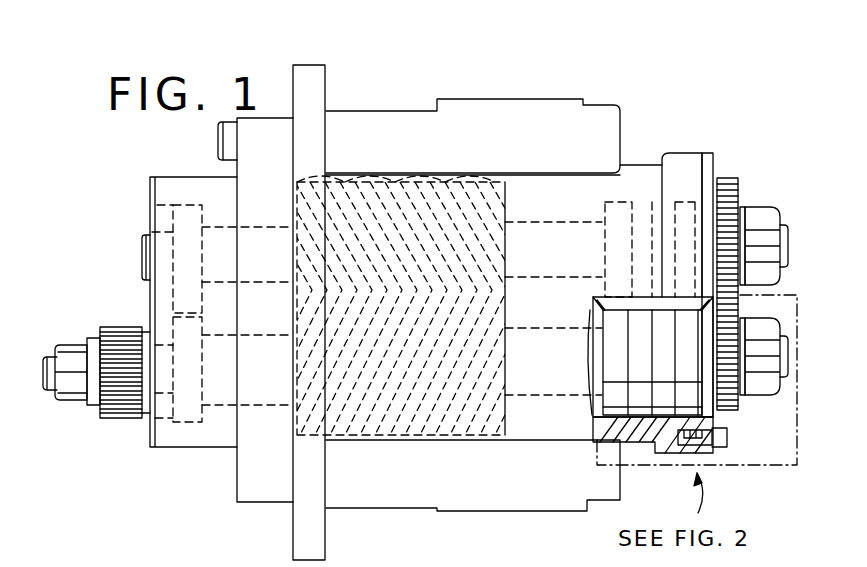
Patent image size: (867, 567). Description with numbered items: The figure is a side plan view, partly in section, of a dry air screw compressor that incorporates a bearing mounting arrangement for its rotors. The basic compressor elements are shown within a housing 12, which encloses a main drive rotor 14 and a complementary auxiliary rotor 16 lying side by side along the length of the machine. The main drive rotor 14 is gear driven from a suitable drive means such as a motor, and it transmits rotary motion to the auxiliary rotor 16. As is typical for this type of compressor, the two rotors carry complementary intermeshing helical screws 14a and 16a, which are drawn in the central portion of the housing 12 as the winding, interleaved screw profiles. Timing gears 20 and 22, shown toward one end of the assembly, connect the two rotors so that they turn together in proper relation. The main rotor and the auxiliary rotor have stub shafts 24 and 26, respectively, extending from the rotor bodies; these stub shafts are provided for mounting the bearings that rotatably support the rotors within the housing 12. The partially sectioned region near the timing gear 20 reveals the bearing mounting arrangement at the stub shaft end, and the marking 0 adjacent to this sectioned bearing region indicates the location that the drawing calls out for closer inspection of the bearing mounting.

The housing 12 is at (397, 113).
The main drive rotor 14 is at (407, 443).
The helical screw 14a is at (470, 443).
The auxiliary rotor 16 is at (387, 177).
The helical screw 16a is at (457, 177).
The timing gear 20 is at (738, 410).
The timing gear 22 is at (740, 178).
The stub shaft 24 is at (528, 327).
The stub shaft 26 is at (533, 221).
The thrust bearing 0 is at (612, 392).